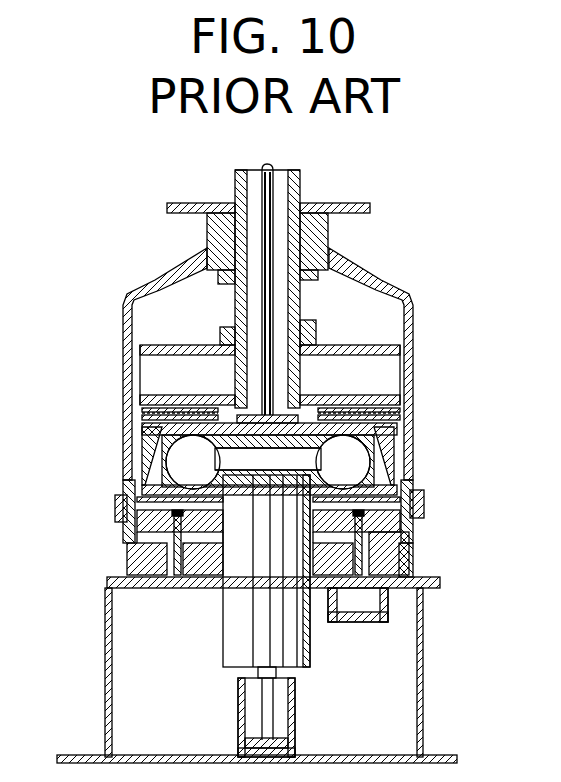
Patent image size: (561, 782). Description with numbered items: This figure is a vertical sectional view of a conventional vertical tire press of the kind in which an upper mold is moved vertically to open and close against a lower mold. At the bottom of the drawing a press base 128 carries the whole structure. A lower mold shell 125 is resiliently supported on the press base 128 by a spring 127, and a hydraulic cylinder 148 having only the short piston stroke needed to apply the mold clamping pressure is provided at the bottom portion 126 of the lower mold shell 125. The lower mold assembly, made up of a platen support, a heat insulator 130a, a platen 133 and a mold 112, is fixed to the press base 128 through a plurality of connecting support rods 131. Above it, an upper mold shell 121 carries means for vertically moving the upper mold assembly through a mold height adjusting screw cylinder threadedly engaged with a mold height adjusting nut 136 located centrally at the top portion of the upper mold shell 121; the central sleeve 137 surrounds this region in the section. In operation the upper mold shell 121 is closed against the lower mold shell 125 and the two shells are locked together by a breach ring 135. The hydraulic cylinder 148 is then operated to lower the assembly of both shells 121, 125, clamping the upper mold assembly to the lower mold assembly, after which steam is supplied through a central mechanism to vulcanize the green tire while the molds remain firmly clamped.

The mold height adjusting nut 136 is at (370, 209).
The bearing sleeve 137 is at (302, 318).
The upper mold shell 121 is at (413, 375).
The mold 112 is at (412, 478).
The heat insulator 130a is at (142, 492).
The breach ring 135 is at (115, 513).
The platen 133 is at (424, 493).
The lower mold shell 125 is at (408, 532).
The bottom portion 126 is at (411, 555).
The spring 127 is at (411, 577).
The press base 128 is at (440, 588).
The connecting support rods 131 is at (178, 572).
The hydraulic cylinder 148 is at (388, 612).